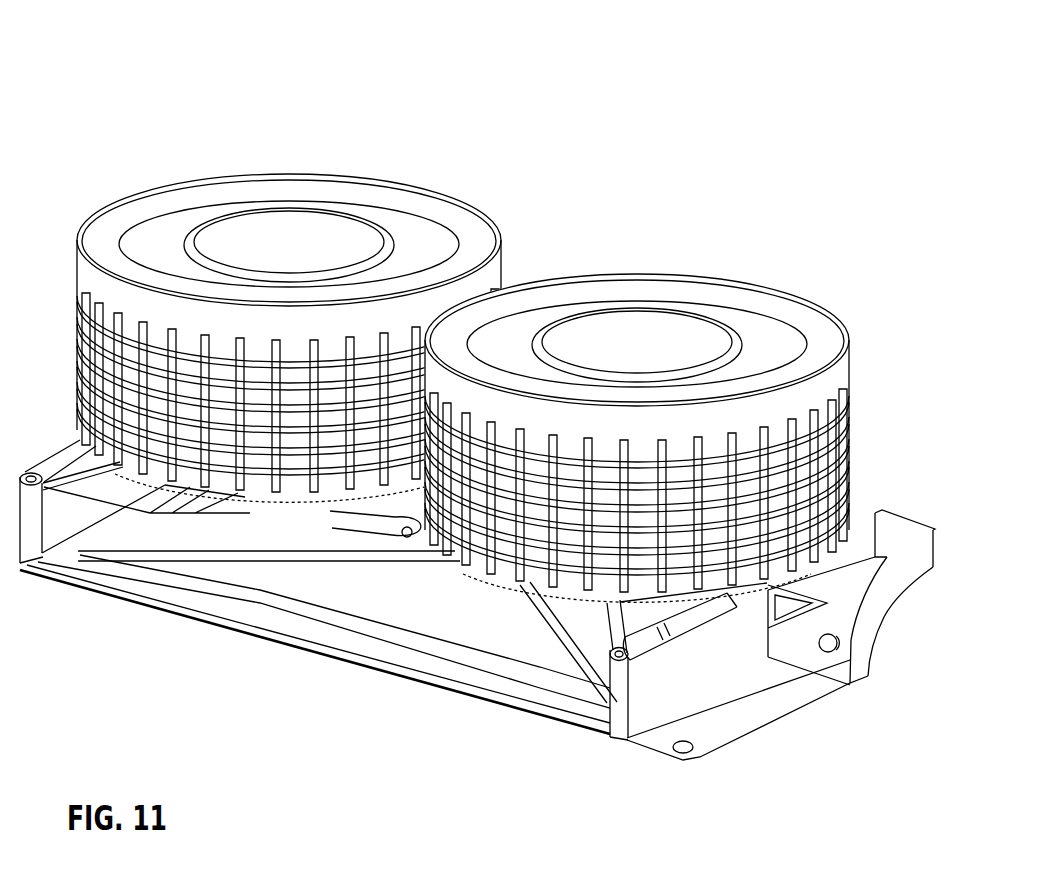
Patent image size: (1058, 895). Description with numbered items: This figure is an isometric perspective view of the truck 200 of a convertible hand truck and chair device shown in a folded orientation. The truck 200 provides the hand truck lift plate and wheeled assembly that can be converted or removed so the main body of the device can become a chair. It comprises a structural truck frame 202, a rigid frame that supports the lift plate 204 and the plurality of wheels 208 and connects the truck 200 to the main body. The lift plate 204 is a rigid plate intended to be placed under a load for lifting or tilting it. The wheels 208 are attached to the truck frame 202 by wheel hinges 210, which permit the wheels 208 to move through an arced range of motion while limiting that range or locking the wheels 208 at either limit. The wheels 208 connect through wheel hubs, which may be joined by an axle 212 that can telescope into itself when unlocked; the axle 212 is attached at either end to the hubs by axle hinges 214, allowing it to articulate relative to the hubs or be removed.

The truck 200 is at (315, 50).
The truck frame 202 is at (643, 697).
The lift plate 204 is at (733, 703).
The wheels 208 is at (812, 347).
The wheel hinges 210 is at (633, 612).
The axle 212 is at (368, 510).
The axle hinges 214 is at (863, 667).